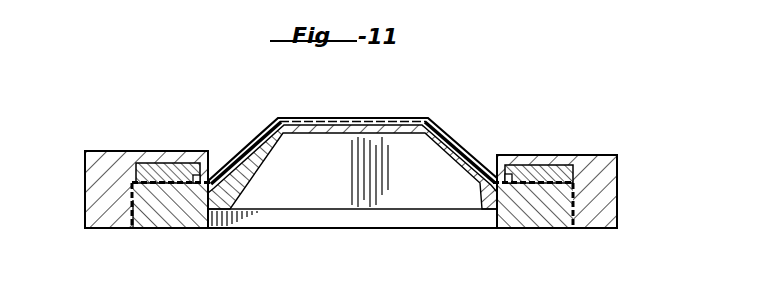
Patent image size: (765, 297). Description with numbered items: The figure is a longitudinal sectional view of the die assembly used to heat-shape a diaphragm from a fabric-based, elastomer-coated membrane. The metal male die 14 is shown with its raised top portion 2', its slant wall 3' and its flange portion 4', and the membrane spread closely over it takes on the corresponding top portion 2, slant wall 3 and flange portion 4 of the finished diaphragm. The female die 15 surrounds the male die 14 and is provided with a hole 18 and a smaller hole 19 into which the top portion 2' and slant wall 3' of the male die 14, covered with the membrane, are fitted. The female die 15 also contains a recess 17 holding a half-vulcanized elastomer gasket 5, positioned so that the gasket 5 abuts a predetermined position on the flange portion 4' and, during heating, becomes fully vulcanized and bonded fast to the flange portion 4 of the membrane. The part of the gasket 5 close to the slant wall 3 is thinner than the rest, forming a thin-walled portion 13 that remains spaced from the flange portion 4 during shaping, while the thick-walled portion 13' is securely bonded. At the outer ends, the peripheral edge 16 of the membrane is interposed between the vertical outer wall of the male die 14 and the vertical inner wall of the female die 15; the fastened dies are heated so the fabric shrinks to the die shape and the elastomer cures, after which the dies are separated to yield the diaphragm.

The top portion 2 is at (351, 154).
The top portion of male die 2' is at (352, 167).
The slant wall 3 is at (366, 101).
The slant wall of male die 3' is at (352, 167).
The flange portion 4 is at (535, 210).
The flange portion of male die 4' is at (170, 231).
The gasket 5 is at (168, 170).
The thin-walled portion 13 is at (352, 192).
The thick-walled portion 13' is at (361, 138).
The male die 14 is at (162, 229).
The female die 15 is at (85, 229).
The peripheral edge 16 is at (585, 224).
The recess 17 is at (191, 178).
The hole 18 is at (136, 222).
The smaller hole 19 is at (209, 176).